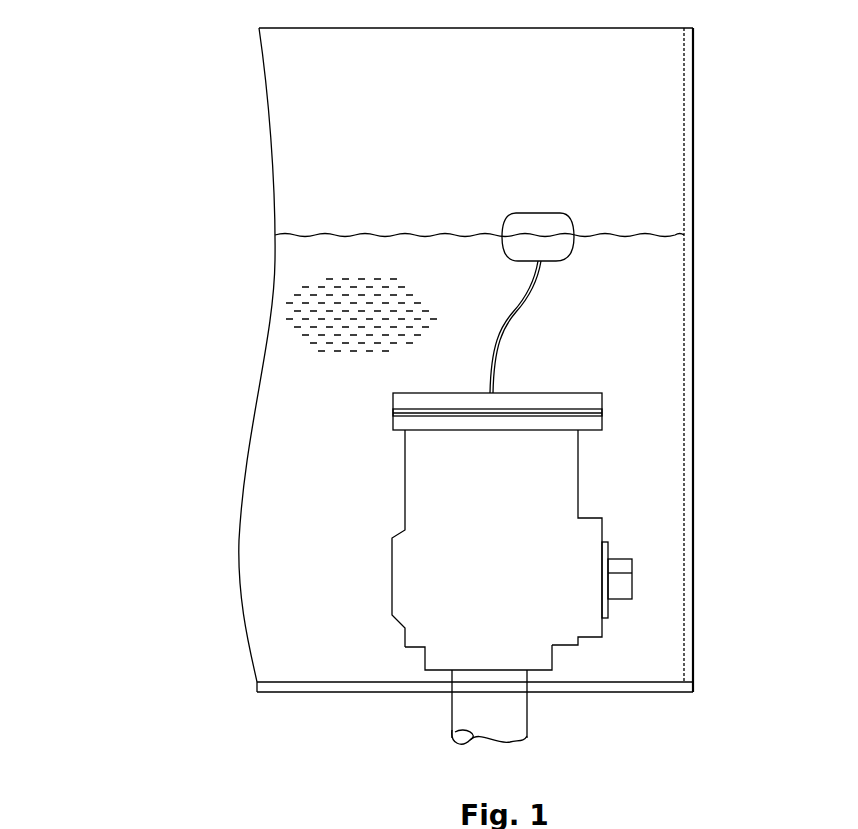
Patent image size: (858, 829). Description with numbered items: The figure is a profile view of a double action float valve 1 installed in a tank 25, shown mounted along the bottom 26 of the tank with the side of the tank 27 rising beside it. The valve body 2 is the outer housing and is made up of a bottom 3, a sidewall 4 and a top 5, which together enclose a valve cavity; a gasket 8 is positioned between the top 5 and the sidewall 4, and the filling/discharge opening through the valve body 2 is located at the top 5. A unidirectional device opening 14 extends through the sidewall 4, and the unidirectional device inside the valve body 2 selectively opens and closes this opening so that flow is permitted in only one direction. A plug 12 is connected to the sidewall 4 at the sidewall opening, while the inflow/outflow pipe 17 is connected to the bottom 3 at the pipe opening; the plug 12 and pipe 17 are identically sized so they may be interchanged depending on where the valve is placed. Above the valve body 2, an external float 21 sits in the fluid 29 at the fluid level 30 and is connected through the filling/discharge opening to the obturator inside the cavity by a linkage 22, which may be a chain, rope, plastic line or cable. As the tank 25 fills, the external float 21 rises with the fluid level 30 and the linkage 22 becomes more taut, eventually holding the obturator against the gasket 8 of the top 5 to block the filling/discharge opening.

The double action float valve 1 is at (386, 339).
The valve body 2 is at (403, 463).
The bottom 3 is at (425, 648).
The sidewall 4 is at (600, 443).
The top 5 is at (406, 393).
The gasket 8 is at (395, 408).
The plug 12 is at (636, 585).
The unidirectional device opening 14 is at (370, 571).
The inflow/outflow pipe 17 is at (527, 730).
The external float 21 is at (574, 229).
The linkage 22 is at (518, 312).
The tank 25 is at (697, 460).
The bottom of the tank 26 is at (650, 693).
The side of the tank 27 is at (697, 143).
The water 29 is at (563, 280).
The fluid level 30 is at (322, 233).